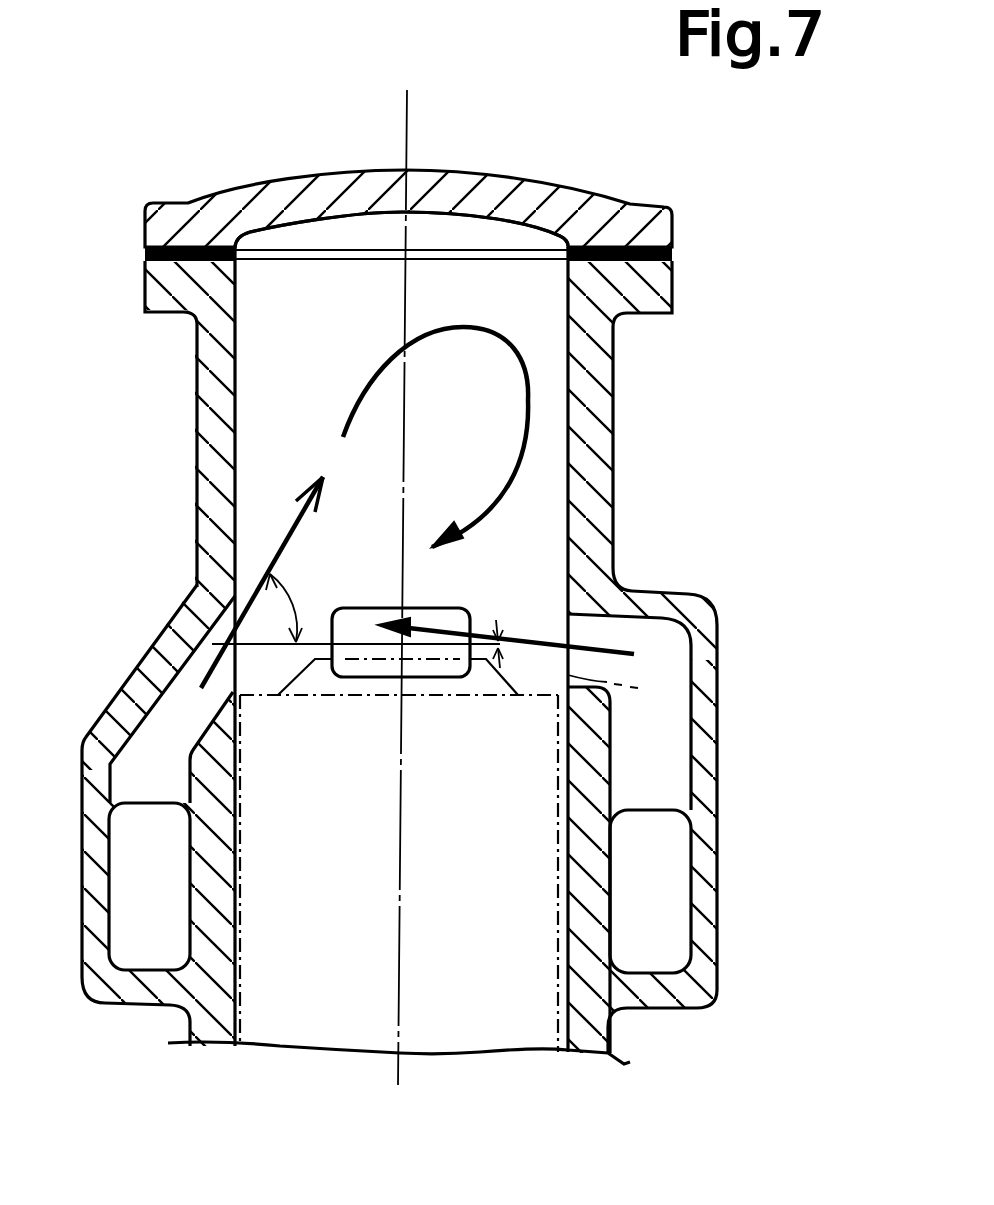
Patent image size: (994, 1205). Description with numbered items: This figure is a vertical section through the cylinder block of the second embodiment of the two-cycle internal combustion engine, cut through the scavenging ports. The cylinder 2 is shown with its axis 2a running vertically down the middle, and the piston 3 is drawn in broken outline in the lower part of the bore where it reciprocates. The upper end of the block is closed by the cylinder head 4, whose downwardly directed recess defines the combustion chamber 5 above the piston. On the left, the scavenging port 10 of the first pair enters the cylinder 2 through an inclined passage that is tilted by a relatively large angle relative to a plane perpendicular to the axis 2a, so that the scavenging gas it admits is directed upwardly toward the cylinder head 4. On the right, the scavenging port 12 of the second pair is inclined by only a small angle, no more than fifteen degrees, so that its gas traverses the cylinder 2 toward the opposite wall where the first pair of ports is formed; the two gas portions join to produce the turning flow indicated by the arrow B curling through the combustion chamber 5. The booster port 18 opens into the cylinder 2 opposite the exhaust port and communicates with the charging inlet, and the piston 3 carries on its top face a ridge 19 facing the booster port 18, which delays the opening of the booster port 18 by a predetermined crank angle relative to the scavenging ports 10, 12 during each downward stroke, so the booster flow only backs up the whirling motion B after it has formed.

The cylinder 2 is at (237, 442).
The axis of the cylinder 2a is at (400, 983).
The piston 3 is at (337, 972).
The cylinder head 4 is at (263, 196).
The combustion chamber 5 is at (448, 232).
The scavenging port 10 is at (180, 706).
The scavenging port 12 is at (660, 642).
The booster port 18 is at (442, 610).
The ridge 19 is at (647, 692).
The turning flow B is at (487, 327).